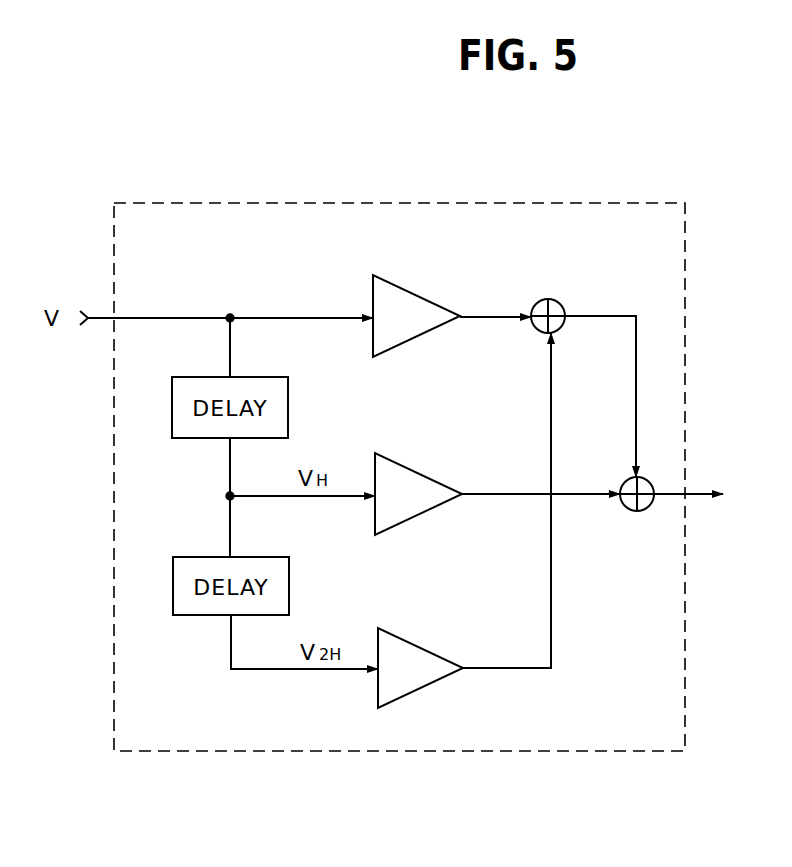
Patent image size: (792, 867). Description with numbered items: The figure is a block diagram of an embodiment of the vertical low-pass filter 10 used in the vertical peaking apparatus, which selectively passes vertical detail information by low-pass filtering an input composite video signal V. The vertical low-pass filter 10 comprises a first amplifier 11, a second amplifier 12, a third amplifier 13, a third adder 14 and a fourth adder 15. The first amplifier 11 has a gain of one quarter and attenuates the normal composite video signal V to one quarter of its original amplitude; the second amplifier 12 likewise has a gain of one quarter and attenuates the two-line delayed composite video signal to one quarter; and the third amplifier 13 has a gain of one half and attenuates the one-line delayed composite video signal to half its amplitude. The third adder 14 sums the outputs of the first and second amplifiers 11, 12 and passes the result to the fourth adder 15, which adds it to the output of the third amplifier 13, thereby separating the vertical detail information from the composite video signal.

The vertical low-pass filter 10 is at (672, 293).
The first amplifier 11 is at (439, 306).
The second amplifier 12 is at (438, 656).
The third amplifier 13 is at (434, 485).
The third adder 14 is at (564, 304).
The fourth adder 15 is at (632, 511).